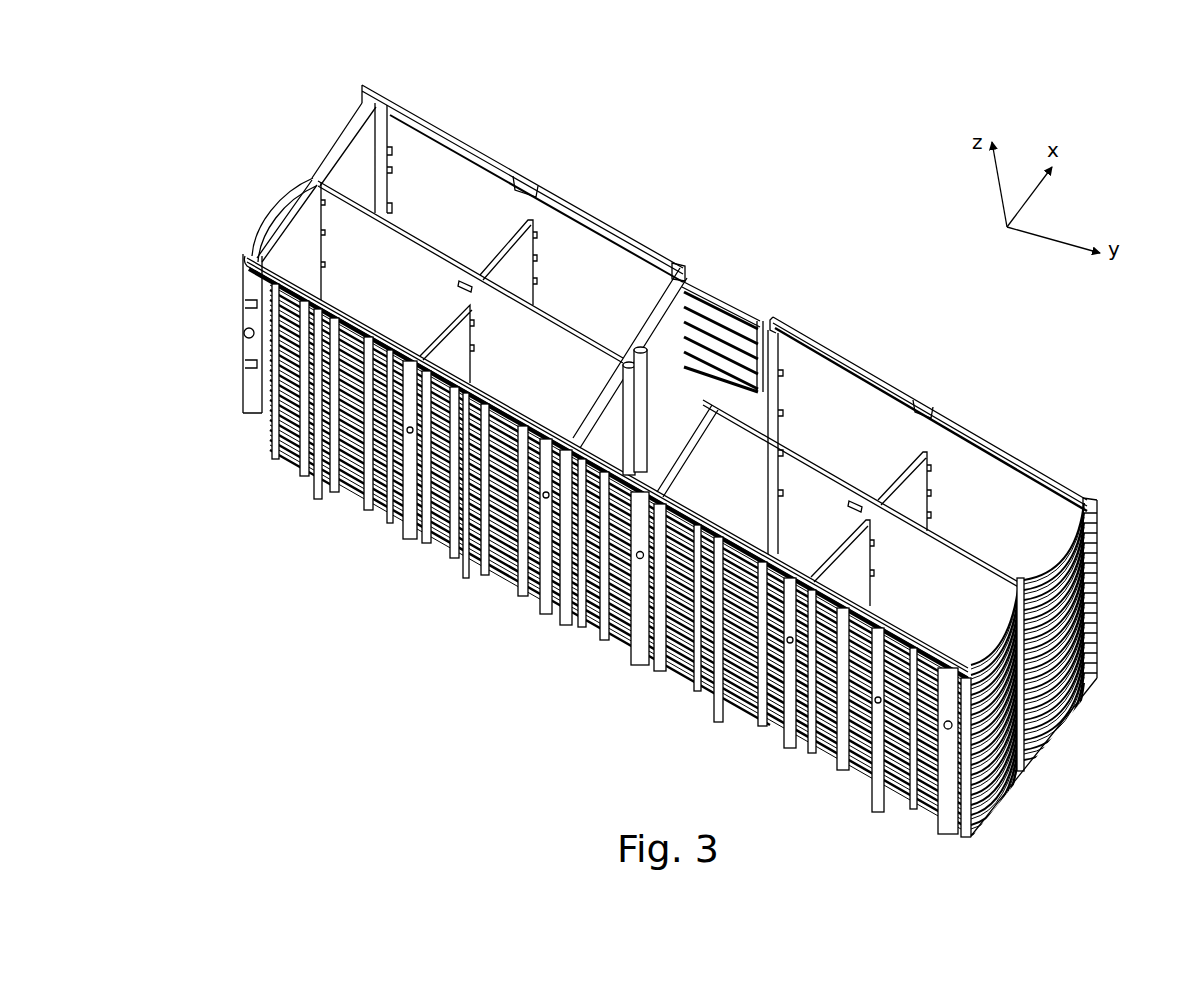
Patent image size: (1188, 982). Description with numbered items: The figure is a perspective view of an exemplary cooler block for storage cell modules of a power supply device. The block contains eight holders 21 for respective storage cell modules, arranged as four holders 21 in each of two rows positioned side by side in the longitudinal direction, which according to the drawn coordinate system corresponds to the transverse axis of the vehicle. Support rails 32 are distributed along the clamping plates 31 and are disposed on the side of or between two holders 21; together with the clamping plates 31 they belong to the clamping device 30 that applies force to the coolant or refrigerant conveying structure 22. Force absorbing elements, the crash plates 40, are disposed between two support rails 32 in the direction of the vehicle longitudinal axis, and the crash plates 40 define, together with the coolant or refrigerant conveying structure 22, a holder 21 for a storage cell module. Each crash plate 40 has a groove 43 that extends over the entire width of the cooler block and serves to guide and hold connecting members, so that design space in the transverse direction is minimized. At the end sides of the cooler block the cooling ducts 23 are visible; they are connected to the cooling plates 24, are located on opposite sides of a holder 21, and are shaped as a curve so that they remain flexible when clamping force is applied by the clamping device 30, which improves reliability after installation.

The holder 21 is at (393, 240).
The coolant or refrigerant conveying structure 22 is at (703, 388).
The cooling duct 23 is at (258, 232).
The cooling plate 24 is at (490, 190).
The clamping device 30 is at (1035, 445).
The clamping plate 31 is at (246, 332).
The support rail 32 is at (255, 412).
The crash plate 40 is at (360, 122).
The groove 43 is at (347, 177).